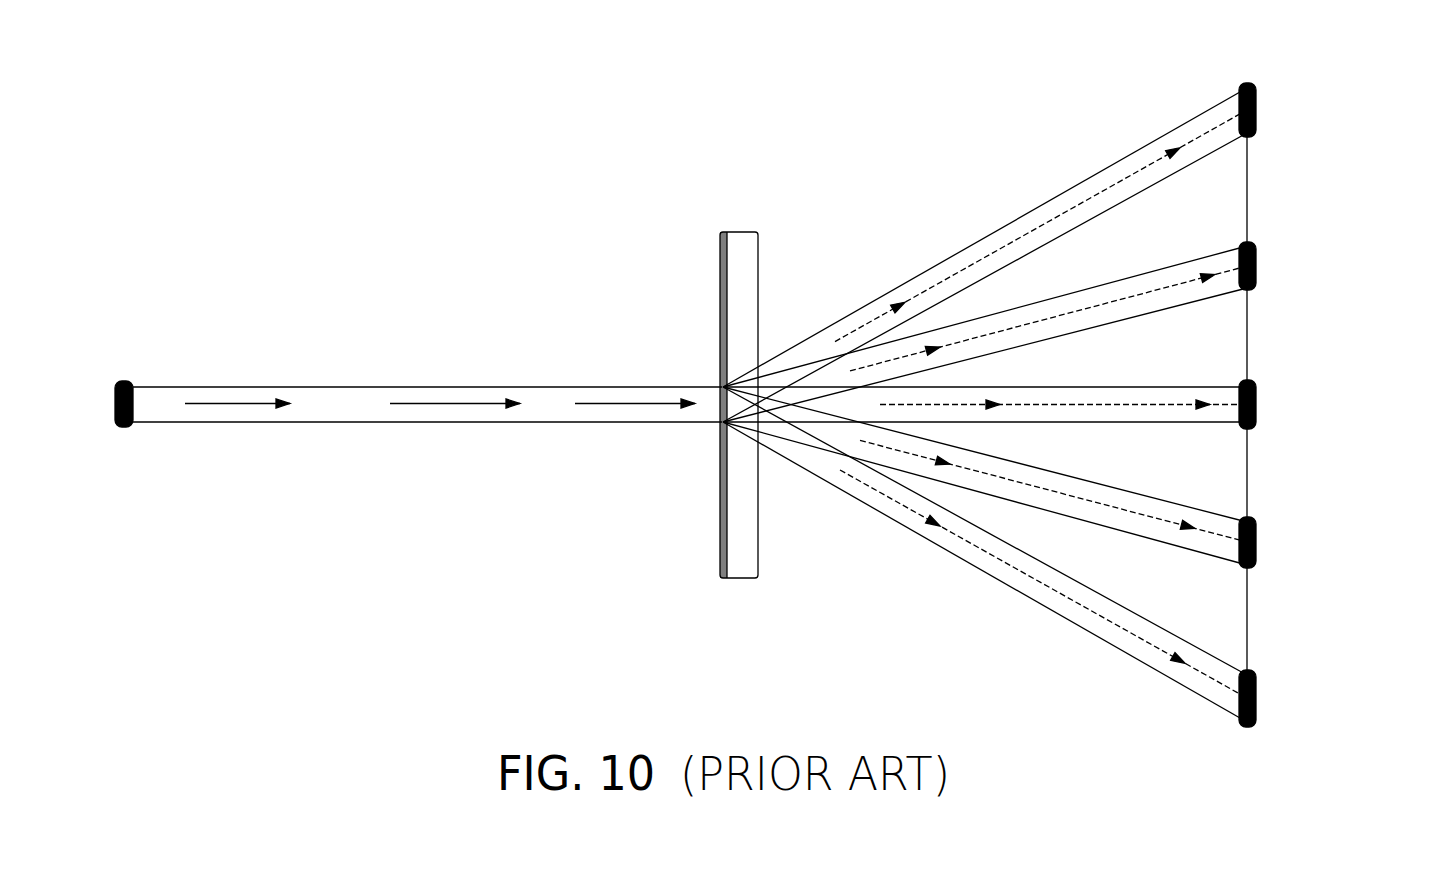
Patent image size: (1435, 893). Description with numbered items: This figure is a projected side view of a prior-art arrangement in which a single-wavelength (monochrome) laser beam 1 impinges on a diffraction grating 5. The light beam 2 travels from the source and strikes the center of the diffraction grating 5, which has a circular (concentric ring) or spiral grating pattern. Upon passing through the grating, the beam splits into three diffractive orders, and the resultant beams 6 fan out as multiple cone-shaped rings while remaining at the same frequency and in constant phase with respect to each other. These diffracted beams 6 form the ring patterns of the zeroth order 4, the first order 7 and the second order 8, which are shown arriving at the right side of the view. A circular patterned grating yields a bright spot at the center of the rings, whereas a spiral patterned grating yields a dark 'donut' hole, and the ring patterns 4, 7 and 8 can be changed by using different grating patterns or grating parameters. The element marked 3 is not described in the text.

The laser beam 1 is at (118, 389).
The light beam 2 is at (173, 420).
The beam propagation direction 3 is at (273, 403).
The 0th order 4 is at (1256, 406).
The diffraction grating 5 is at (742, 248).
The resultant beams 6 is at (942, 527).
The 1st order 7 is at (1256, 265).
The 2nd order 8 is at (1256, 108).